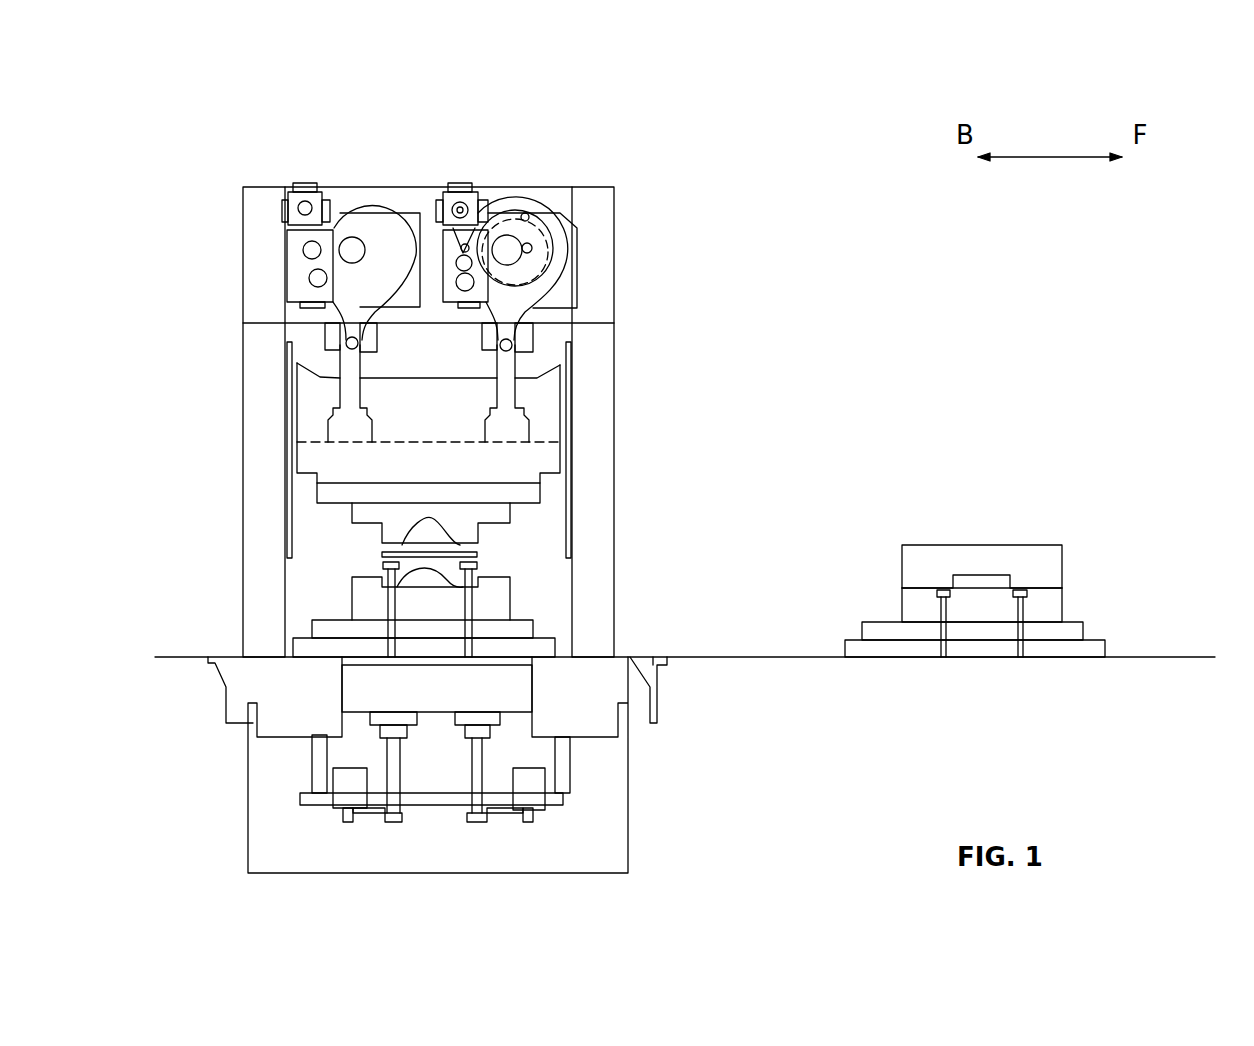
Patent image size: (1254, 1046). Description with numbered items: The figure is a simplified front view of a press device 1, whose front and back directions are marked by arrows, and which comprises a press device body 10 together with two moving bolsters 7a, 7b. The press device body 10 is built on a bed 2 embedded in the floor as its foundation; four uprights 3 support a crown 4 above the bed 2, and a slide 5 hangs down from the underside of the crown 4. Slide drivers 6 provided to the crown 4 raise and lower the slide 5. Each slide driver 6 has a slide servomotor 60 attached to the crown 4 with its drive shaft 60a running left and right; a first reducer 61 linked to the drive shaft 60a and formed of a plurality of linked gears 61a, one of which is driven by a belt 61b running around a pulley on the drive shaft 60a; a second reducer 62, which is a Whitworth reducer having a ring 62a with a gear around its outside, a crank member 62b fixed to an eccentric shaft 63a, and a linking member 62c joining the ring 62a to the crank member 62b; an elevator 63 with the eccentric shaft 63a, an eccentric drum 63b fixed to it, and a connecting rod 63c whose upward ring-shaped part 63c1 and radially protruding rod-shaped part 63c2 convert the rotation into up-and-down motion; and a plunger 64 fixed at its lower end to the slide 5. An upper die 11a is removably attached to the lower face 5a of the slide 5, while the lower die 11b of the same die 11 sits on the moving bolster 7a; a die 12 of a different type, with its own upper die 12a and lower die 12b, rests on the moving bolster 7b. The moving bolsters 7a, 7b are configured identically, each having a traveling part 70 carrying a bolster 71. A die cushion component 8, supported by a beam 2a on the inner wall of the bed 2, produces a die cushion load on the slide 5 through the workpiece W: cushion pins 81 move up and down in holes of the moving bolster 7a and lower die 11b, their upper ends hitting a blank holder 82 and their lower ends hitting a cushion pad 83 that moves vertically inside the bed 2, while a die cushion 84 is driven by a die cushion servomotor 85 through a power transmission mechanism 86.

The press device 1 is at (804, 240).
The press device body 10 is at (258, 170).
The bed 2 is at (587, 703).
The beam 2a is at (377, 800).
The uprights 3 is at (257, 468).
The crown 4 is at (611, 254).
The slide 5 is at (313, 413).
The lower face 5a is at (495, 508).
The slide drivers 6 is at (272, 261).
The moving bolster 7a is at (514, 618).
The moving bolster 7b is at (1068, 616).
The die cushion component 8 is at (353, 739).
The die 11 is at (227, 566).
The upper die 11a is at (367, 515).
The lower die 11b is at (367, 600).
The die 12 is at (905, 577).
The upper die 12a is at (915, 568).
The lower die 12b is at (915, 610).
The slide servomotor 60 is at (305, 185).
The drive shaft 60a is at (451, 193).
The first reducer 61 is at (282, 280).
The gears 61a is at (443, 238).
The belt 61b is at (452, 258).
The second reducer 62 is at (349, 193).
The ring 62a is at (545, 213).
The crank member 62b is at (532, 255).
The linking member 62c is at (505, 217).
The elevator 63 is at (342, 306).
The eccentric shaft 63a is at (530, 308).
The eccentric drum 63b is at (548, 303).
The connecting rod 63c is at (589, 362).
The ring-shaped part 63c1 is at (524, 298).
The rod-shaped part 63c2 is at (537, 378).
The plunger 64 is at (507, 390).
The traveling part 70 is at (545, 645).
The bolster 71 is at (518, 621).
The cushion pins 81 is at (470, 573).
The blank holder 82 is at (478, 565).
The cushion pad 83 is at (515, 690).
The die cushion 84 is at (514, 739).
The die cushion servomotor 85 is at (343, 787).
The power transmission mechanism 86 is at (365, 832).
The workpiece W is at (443, 552).